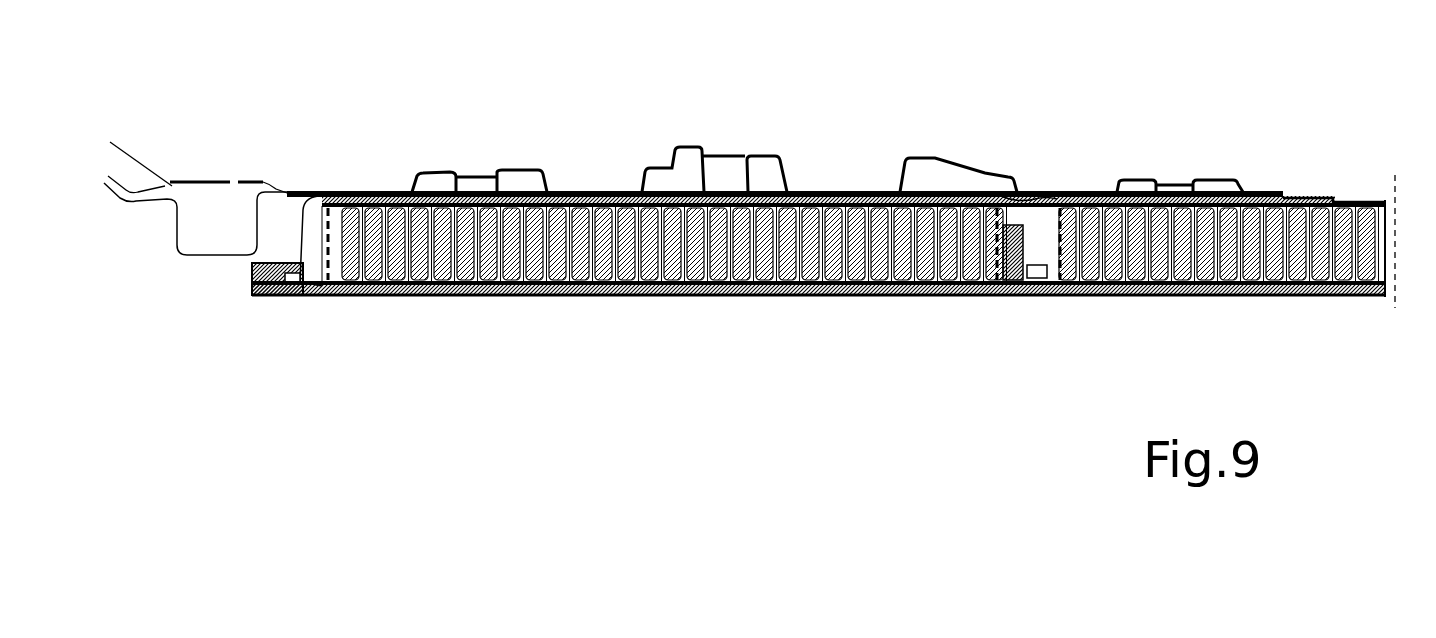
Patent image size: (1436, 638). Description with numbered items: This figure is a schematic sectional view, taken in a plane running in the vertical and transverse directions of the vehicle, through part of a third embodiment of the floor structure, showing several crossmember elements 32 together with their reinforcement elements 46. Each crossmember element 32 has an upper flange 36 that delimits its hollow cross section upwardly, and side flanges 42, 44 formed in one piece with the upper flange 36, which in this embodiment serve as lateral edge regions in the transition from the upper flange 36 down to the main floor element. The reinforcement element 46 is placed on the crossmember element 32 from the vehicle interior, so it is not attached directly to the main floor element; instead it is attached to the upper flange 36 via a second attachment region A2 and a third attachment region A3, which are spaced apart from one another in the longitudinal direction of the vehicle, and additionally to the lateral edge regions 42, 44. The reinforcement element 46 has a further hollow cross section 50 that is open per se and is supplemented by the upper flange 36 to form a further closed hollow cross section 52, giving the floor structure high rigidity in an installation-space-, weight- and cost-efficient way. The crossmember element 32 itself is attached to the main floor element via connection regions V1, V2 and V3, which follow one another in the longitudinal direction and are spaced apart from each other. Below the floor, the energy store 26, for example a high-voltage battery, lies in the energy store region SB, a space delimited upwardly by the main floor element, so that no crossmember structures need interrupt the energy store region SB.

The energy store 26 is at (838, 287).
The crossmember element 32 is at (526, 176).
The upper flange 36 is at (440, 194).
The side flange 42 is at (412, 190).
The side flange 44 is at (553, 182).
The reinforcement element 46 is at (479, 170).
The further hollow cross section 50 is at (520, 240).
The further closed hollow cross section 52 is at (472, 230).
The second attachment region A2 is at (420, 172).
The third attachment region A3 is at (517, 194).
The connection region V1 is at (392, 238).
The connection region V2 is at (578, 205).
The connection region V3 is at (450, 240).
The energy store region SB is at (280, 252).